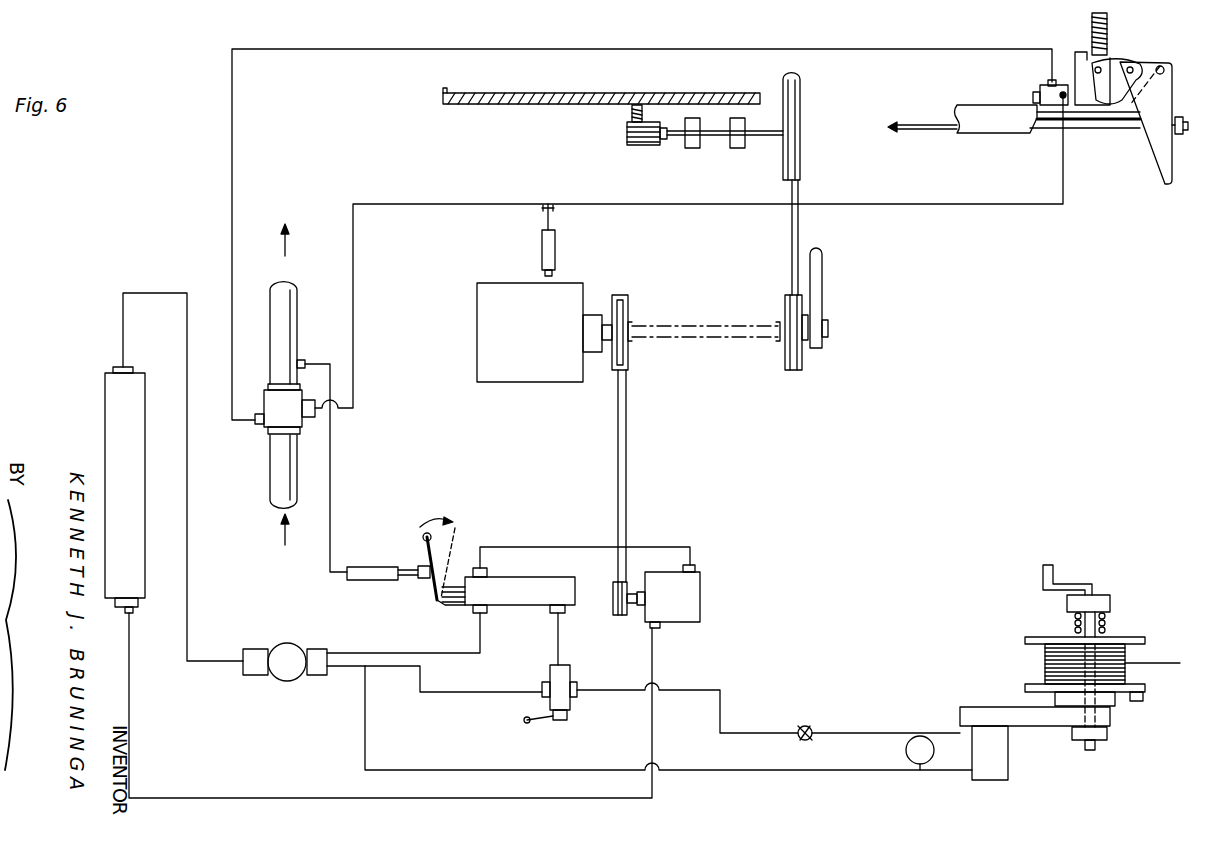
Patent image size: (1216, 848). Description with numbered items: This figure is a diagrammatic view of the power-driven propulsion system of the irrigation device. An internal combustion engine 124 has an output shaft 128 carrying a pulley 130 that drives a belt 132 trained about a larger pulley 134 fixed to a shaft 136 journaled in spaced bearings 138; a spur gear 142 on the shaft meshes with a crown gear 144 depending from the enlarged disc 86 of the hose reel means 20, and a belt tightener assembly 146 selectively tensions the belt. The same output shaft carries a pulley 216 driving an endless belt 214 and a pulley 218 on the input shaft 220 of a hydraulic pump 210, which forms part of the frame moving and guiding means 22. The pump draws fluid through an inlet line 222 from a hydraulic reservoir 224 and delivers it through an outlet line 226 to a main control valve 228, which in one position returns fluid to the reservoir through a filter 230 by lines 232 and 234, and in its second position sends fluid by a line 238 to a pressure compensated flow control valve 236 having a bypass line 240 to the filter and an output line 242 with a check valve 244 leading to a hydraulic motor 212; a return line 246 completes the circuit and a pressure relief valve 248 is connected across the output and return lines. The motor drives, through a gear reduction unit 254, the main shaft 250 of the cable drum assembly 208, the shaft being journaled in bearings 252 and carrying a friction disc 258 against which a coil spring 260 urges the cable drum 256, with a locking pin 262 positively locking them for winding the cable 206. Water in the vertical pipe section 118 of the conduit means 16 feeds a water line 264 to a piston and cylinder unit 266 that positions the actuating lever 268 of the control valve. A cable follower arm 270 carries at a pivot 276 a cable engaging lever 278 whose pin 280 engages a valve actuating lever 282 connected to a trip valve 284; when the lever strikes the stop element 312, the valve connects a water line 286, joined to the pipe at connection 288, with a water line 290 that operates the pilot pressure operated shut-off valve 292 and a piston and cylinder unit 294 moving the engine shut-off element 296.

The conduit means 16 is at (267, 297).
The hose reel means 20 is at (490, 106).
The frame moving and guiding means 22 is at (1041, 661).
The enlarged disc 86 is at (598, 92).
The vertical pipe section 118 is at (290, 336).
The internal combustion engine 124 is at (530, 386).
The output shaft 128 is at (775, 334).
The pulley 130 is at (803, 366).
The belt 132 is at (800, 231).
The larger pulley 134 is at (800, 171).
The shaft 136 is at (722, 148).
The bearings 138 is at (738, 118).
The spur gear 142 is at (652, 147).
The crown gear 144 is at (632, 118).
The belt tightener assembly 146 is at (824, 288).
The cable 206 is at (1180, 663).
The cable drum assembly 208 is at (1030, 637).
The hydraulic pump 210 is at (697, 607).
The hydraulic motor 212 is at (976, 724).
The endless belt 214 is at (628, 463).
The pulley 216 is at (632, 302).
The pulley 218 is at (613, 616).
The input shaft 220 is at (638, 572).
The inlet line 222 is at (133, 704).
The hydraulic reservoir 224 is at (100, 376).
The outlet line 226 is at (600, 546).
The main control valve 228 is at (525, 576).
The filter 230 is at (292, 649).
The line 232 is at (430, 652).
The line 234 is at (190, 563).
The pressure compensated flow control valve 236 is at (567, 702).
The line 238 is at (556, 643).
The bypass line 240 is at (460, 696).
The output line 242 is at (727, 704).
The check valve 244 is at (810, 724).
The return line 246 is at (755, 772).
The pressure relief valve 248 is at (917, 772).
The main shaft 250 is at (1095, 752).
The bearings 252 is at (1065, 603).
The gear reduction unit 254 is at (1040, 722).
The cable drum 256 is at (1104, 640).
The friction disc 258 is at (1116, 706).
The coil spring 260 is at (1110, 600).
The locking pin 262 is at (1143, 698).
The water line 264 is at (333, 470).
The piston and cylinder unit 266 is at (383, 567).
The actuating lever 268 is at (462, 528).
The cable follower arm 270 is at (965, 105).
The pivot 276 is at (1176, 42).
The cable engaging lever 278 is at (1150, 161).
The pin 280 is at (1096, 104).
The valve actuating lever 282 is at (1092, 36).
The trip valve 284 is at (1048, 83).
The water line 286 is at (505, 47).
The connection 288 is at (258, 432).
The water line 290 is at (945, 206).
The pilot pressure operated shut-off valve 292 is at (292, 402).
The piston and cylinder unit 294 is at (558, 251).
The engine shut-off element 296 is at (552, 277).
The stop element 312 is at (1141, 131).